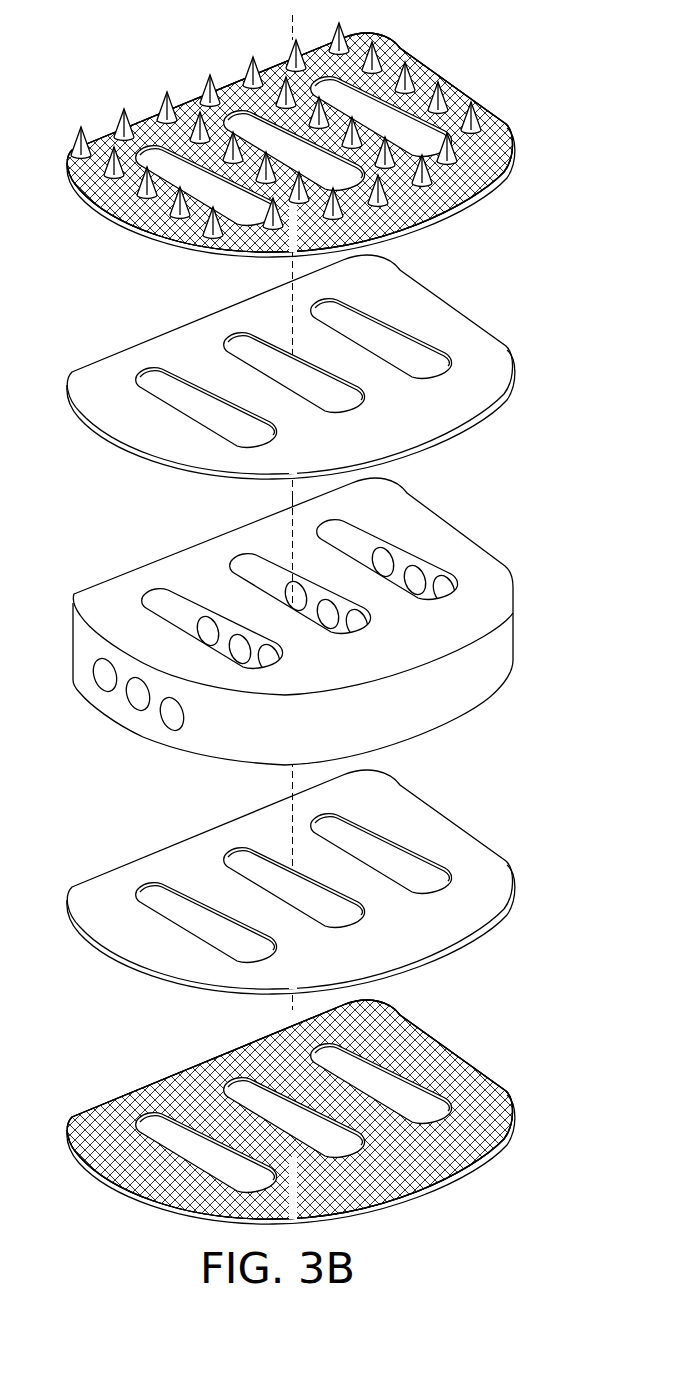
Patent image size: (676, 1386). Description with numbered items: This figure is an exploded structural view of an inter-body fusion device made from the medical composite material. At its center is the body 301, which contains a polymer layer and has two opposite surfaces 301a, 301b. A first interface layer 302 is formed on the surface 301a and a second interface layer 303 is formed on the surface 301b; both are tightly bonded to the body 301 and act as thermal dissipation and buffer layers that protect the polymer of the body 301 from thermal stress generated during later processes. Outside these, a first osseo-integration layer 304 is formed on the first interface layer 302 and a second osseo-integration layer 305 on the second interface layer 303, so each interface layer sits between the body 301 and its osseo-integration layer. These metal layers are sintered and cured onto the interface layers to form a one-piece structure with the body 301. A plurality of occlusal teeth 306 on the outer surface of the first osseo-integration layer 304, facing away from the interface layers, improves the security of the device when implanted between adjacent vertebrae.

The body 301 is at (326, 621).
The surface of the body 301a is at (487, 578).
The surface of the body 301b is at (487, 701).
The first interface layer 302 is at (488, 357).
The second interface layer 303 is at (488, 872).
The first osseo-integration layer 304 is at (494, 146).
The second osseo-integration layer 305 is at (491, 1098).
The occlusal teeth 306 is at (490, 121).